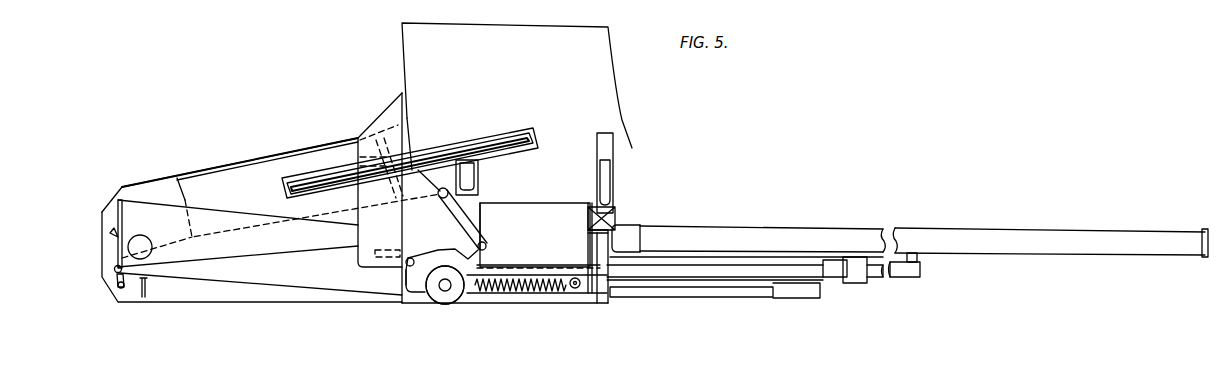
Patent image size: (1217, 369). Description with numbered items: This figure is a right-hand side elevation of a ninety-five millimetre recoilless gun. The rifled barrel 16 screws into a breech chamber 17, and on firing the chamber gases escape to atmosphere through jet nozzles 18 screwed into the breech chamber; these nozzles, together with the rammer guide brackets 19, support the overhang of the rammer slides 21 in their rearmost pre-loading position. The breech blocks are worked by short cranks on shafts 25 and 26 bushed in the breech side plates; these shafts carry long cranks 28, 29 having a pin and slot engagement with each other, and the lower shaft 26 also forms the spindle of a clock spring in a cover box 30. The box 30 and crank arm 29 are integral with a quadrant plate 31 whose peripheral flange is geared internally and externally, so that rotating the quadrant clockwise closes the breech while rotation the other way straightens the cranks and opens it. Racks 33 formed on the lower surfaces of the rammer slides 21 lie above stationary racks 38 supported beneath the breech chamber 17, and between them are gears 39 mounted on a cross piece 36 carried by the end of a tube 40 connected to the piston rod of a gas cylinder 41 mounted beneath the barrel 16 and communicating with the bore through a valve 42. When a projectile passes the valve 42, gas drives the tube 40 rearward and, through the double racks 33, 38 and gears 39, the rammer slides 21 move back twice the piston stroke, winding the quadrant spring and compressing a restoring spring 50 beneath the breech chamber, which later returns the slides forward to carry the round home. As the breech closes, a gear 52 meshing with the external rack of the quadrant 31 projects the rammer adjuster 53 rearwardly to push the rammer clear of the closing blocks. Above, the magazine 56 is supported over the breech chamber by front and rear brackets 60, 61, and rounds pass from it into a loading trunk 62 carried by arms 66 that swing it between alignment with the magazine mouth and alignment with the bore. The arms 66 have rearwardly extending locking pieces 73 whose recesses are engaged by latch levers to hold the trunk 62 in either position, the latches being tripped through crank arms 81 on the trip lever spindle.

The barrel 16 is at (697, 232).
The breech chamber 17 is at (600, 222).
The jet nozzles 18 is at (236, 248).
The rammer guide brackets 19 is at (317, 280).
The rammer slides 21 is at (668, 270).
The shaft 25 is at (362, 137).
The lower shaft 26 is at (458, 292).
The long crank 28 is at (478, 205).
The crank arm 29 is at (468, 272).
The cover box 30 is at (445, 288).
The quadrant plate 31 is at (420, 285).
The racks 33 is at (740, 278).
The cross piece 36 is at (590, 283).
The stationary racks 38 is at (598, 292).
The gears 39 is at (583, 290).
The tube 40 is at (713, 290).
The gas cylinder 41 is at (873, 270).
The valve 42 is at (920, 272).
The spring 50 is at (548, 292).
The gear 52 is at (397, 270).
The rammer adjuster 53 is at (413, 258).
The magazine 56 is at (517, 96).
The front bracket 60 is at (605, 182).
The rear bracket 61 is at (463, 170).
The loading trunk 62 is at (255, 180).
The arms 66 is at (172, 195).
The locking pieces 73 is at (110, 233).
The crank arms 81 is at (102, 277).